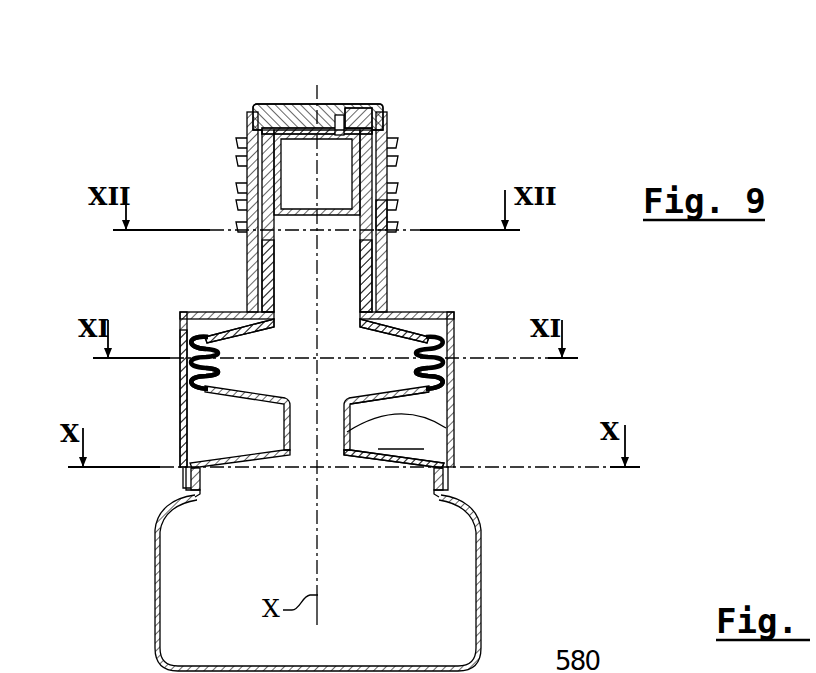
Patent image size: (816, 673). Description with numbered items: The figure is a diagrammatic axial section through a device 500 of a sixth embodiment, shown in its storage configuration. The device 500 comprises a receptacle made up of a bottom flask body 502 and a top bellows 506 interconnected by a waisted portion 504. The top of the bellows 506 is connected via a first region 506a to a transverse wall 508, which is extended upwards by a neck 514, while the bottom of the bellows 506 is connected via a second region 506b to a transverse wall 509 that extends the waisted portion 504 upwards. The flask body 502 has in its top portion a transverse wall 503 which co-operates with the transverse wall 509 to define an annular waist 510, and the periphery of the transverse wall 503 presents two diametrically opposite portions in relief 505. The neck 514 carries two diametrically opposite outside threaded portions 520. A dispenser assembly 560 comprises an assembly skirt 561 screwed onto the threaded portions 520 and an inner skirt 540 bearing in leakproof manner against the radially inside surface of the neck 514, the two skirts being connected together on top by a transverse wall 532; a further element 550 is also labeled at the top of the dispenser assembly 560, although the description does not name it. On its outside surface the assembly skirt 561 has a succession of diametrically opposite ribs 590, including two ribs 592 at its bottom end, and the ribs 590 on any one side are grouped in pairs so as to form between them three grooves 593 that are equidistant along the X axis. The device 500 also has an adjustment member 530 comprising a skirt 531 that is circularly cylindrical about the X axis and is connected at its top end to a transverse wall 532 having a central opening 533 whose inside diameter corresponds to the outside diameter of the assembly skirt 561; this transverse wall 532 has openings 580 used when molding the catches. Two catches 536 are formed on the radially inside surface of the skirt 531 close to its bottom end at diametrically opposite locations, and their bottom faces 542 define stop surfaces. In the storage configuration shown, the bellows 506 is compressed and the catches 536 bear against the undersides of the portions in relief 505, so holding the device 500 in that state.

The device 500 is at (432, 113).
The flask body 502 is at (482, 590).
The transverse wall 503 is at (390, 462).
The waisted portion 504 is at (400, 416).
The portions in relief 505 is at (208, 470).
The bellows 506 is at (438, 343).
The first region 506a is at (185, 340).
The second region 506b is at (440, 385).
The transverse wall 508 is at (364, 330).
The transverse wall 509 is at (218, 393).
The annular waist 510 is at (389, 421).
The neck 514 is at (387, 216).
The threaded portions 520 is at (238, 168).
The adjustment member 530 is at (165, 342).
The skirt 531 is at (180, 418).
The transverse wall 532 is at (378, 118).
The central opening 533 is at (268, 330).
The catches 536 is at (185, 476).
The inner skirt 540 is at (277, 118).
The bottom faces 542 is at (190, 491).
The insert 550 is at (350, 102).
The dispenser assembly 560 is at (305, 100).
The assembly skirt 561 is at (262, 272).
The openings 580 is at (442, 312).
The ribs 590 is at (247, 245).
The ribs 592 is at (374, 285).
The grooves 593 is at (238, 150).